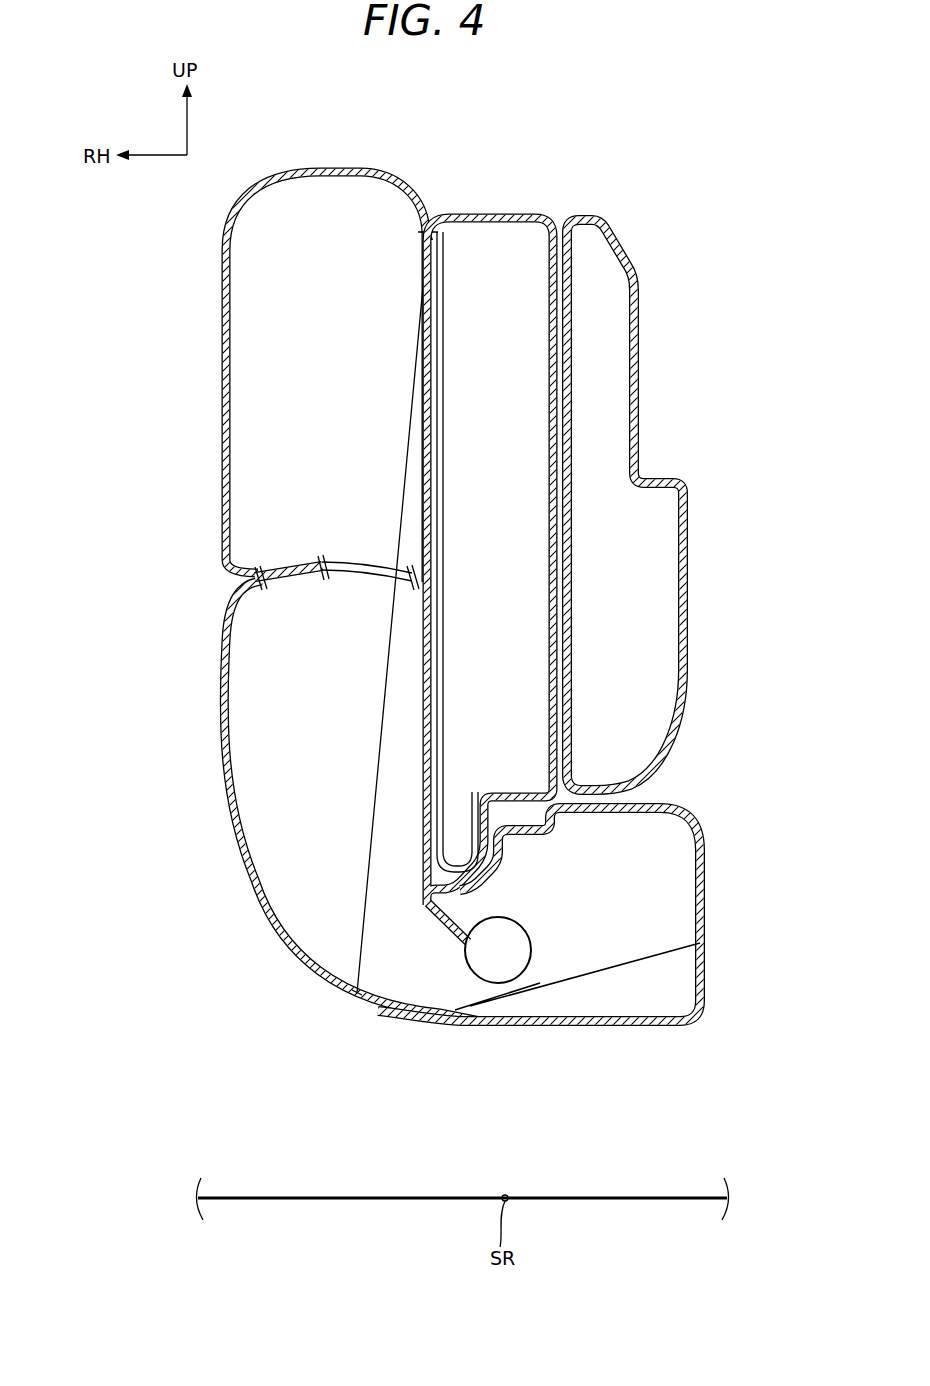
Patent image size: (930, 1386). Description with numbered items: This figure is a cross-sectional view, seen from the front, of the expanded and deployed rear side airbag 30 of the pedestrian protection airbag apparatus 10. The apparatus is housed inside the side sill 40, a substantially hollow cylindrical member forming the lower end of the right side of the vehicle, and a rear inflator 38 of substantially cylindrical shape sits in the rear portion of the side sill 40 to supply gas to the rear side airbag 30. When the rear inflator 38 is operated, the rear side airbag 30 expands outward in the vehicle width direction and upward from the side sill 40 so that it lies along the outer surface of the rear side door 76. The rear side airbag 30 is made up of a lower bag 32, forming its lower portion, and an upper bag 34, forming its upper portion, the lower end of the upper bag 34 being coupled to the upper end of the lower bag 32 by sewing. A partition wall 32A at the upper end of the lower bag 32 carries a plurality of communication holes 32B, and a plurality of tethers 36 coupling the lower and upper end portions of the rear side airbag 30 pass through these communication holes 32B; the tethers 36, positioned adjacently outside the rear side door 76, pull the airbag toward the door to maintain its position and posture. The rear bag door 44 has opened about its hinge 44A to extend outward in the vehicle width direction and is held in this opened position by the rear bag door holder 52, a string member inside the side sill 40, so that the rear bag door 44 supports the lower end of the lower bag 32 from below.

The pedestrian protection airbag apparatus 10 is at (417, 125).
The rear side airbag 30 is at (362, 168).
The upper bag 34 is at (218, 402).
The lower bag 32 is at (312, 788).
The partition wall 32A is at (298, 586).
The communication holes 32B is at (350, 586).
The tethers 36 is at (403, 456).
The rear side door 76 is at (497, 205).
The rear inflator 38 is at (521, 918).
The side sill 40 is at (539, 954).
The rear bag door 44 is at (539, 1051).
The hinge 44A is at (519, 1032).
The rear bag door holder 52 is at (650, 960).